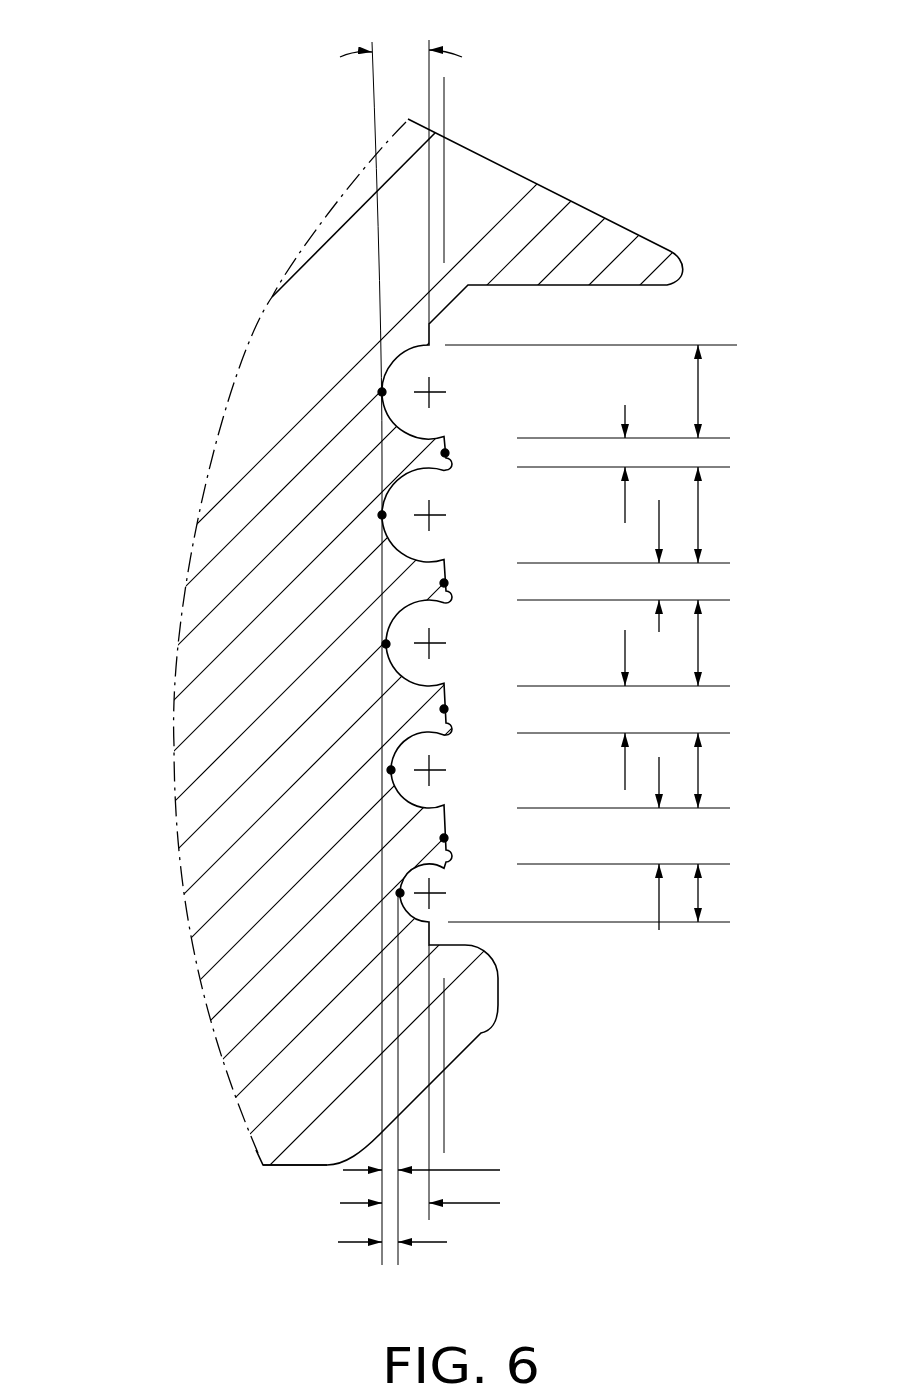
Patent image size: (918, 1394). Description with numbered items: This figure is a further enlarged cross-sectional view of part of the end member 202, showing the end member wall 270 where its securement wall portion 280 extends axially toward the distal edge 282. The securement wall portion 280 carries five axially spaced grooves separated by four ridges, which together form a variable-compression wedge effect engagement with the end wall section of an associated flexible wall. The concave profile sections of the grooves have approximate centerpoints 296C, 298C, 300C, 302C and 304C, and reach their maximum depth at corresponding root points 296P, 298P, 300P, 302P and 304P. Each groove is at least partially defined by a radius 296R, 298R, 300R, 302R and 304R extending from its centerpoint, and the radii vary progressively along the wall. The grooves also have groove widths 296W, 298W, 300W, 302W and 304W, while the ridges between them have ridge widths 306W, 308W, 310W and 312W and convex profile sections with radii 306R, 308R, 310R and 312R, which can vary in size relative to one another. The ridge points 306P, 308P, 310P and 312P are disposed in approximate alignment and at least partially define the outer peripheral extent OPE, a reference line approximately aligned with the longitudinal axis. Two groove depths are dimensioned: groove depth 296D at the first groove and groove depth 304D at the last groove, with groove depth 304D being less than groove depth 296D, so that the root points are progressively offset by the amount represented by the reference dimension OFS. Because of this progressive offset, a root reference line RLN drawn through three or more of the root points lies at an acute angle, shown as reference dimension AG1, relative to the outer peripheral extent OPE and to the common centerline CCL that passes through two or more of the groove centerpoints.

The end member 202 is at (247, 253).
The end member wall 270 is at (306, 330).
The securement wall portion 280 is at (200, 740).
The distal edge 282 is at (287, 1167).
The centerpoint of groove 296 296C is at (434, 390).
The root point of groove 296 296P is at (382, 392).
The radius of groove 296 296R is at (383, 404).
The groove width of groove 296 296W is at (698, 390).
The groove depth of groove 296 296D is at (480, 1203).
The centerpoint of groove 298 298C is at (440, 515).
The root point of groove 298 298P is at (382, 515).
The radius of groove 298 298R is at (384, 528).
The groove width of groove 298 298W is at (698, 518).
The centerpoint of groove 300 300C is at (440, 643).
The root point of groove 300 300P is at (385, 645).
The radius of groove 300 300R is at (388, 657).
The groove width of groove 300 300W is at (698, 640).
The centerpoint of groove 302 302C is at (440, 770).
The root point of groove 302 302P is at (391, 770).
The radius of groove 302 302R is at (393, 784).
The groove width of groove 302 302W is at (698, 770).
The centerpoint of groove 304 304C is at (444, 893).
The root point of groove 304 304P is at (400, 894).
The radius of groove 304 304R is at (403, 881).
The groove width of groove 304 304W is at (698, 890).
The groove depth of groove 304 304D is at (480, 1170).
The ridge point of ridge 306 306P is at (446, 453).
The radius of ridge 306 306R is at (453, 467).
The ridge width of ridge 306 306W is at (625, 406).
The ridge point of ridge 308 308P is at (446, 583).
The radius of ridge 308 308R is at (453, 599).
The ridge width of ridge 308 308W is at (659, 532).
The ridge point of ridge 310 310P is at (446, 709).
The radius of ridge 310 310R is at (453, 730).
The ridge width of ridge 310 310W is at (625, 650).
The ridge point of ridge 312 312P is at (446, 838).
The radius of ridge 312 312R is at (453, 857).
The ridge width of ridge 312 312W is at (659, 898).
The outer peripheral extent OPE is at (445, 112).
The root reference line RLN is at (371, 100).
The common centerline CCL is at (428, 172).
The acute angle AG1 is at (401, 31).
The progressive offset OFS is at (447, 1242).